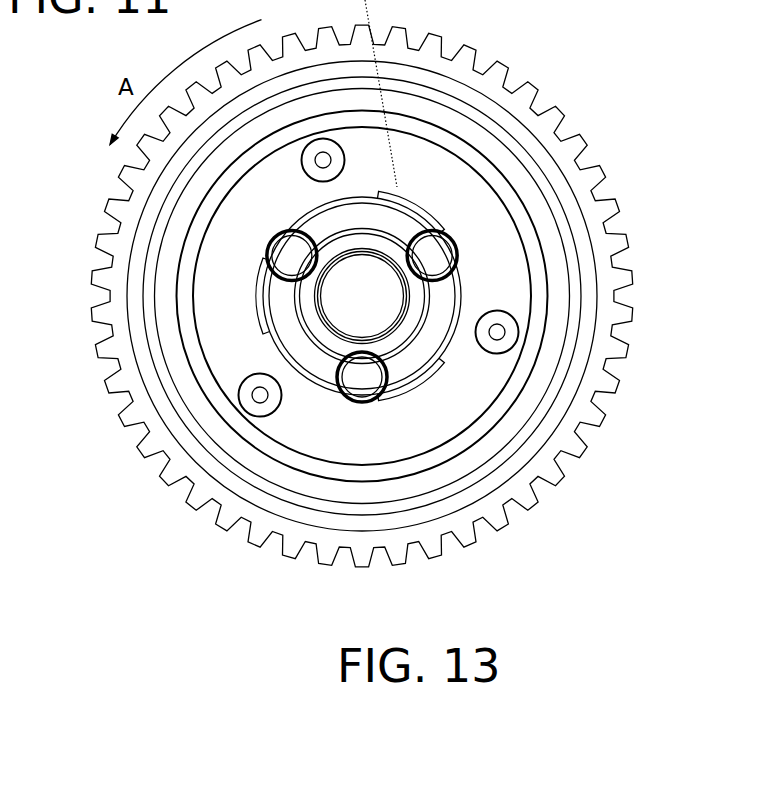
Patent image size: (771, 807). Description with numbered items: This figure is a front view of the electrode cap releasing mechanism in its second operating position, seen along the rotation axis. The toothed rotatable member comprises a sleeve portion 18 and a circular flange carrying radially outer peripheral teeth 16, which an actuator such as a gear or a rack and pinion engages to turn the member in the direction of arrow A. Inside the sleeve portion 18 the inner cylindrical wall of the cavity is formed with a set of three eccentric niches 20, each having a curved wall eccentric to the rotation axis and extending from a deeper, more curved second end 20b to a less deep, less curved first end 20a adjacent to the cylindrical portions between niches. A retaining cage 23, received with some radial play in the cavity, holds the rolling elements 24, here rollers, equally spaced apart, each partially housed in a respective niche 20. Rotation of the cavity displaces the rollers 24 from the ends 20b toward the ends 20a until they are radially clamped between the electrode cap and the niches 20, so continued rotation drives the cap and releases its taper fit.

The radially outer peripheral teeth 16 is at (617, 387).
The sleeve portion 18 is at (432, 175).
The eccentric niches 20 is at (334, 344).
The first end of niche 20a is at (433, 372).
The second end of niche 20b is at (443, 230).
The retaining cage 23 is at (445, 287).
The rolling elements 24 is at (428, 253).